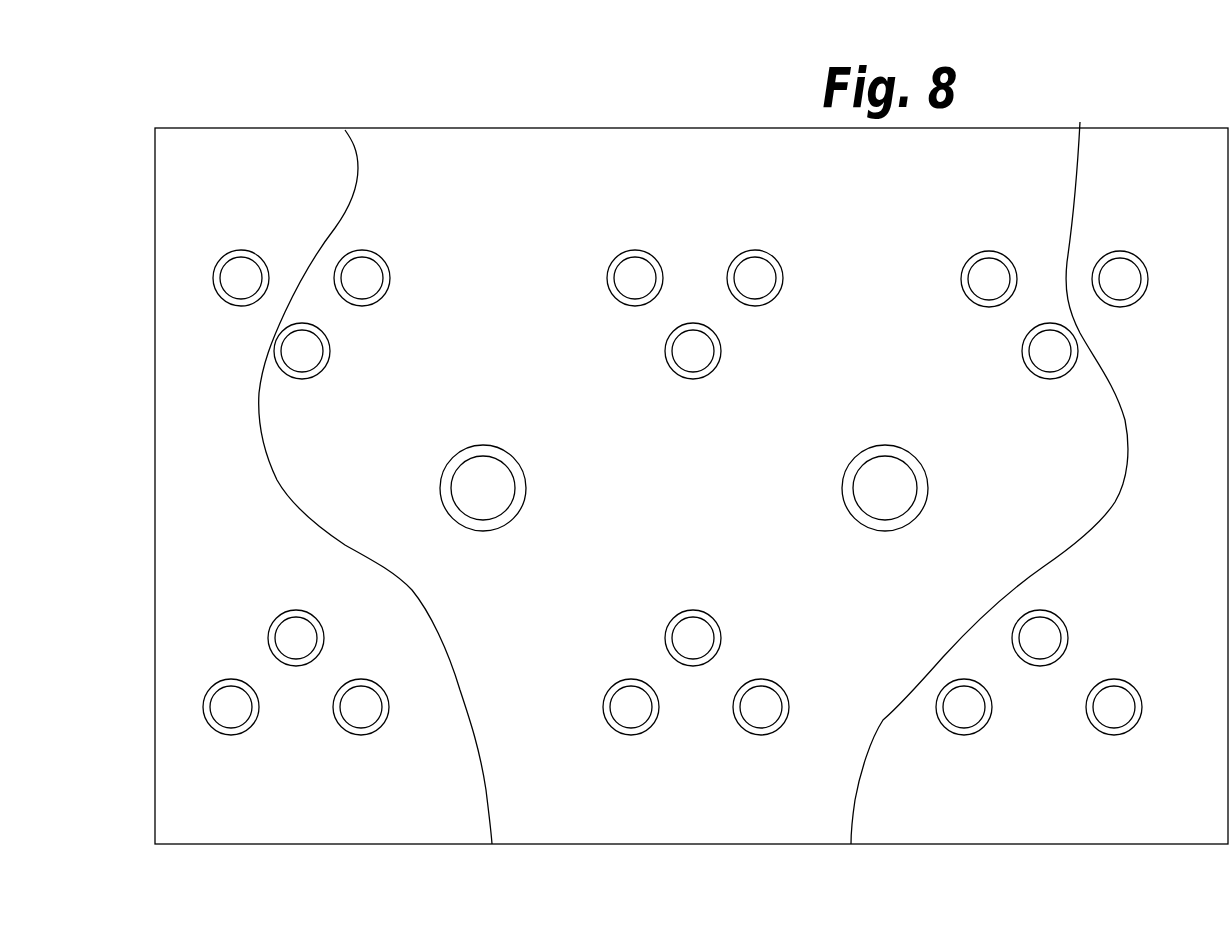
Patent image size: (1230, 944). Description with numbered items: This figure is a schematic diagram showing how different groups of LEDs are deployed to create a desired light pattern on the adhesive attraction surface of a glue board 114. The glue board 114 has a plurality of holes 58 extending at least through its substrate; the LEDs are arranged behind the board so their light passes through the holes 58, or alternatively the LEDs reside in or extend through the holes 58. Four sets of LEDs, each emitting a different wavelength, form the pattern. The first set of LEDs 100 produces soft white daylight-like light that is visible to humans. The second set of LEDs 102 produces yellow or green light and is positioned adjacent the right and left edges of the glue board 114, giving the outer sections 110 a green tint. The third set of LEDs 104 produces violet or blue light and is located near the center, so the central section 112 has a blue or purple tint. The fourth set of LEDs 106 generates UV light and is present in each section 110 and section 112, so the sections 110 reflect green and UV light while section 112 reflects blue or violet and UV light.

The holes 58 is at (243, 250).
The LEDs 100 is at (483, 487).
The LEDs 102 is at (244, 278).
The LEDs 104 is at (362, 278).
The LEDs 106 is at (303, 338).
The sections 110 is at (213, 195).
The section 112 is at (685, 195).
The glue board 114 is at (423, 128).